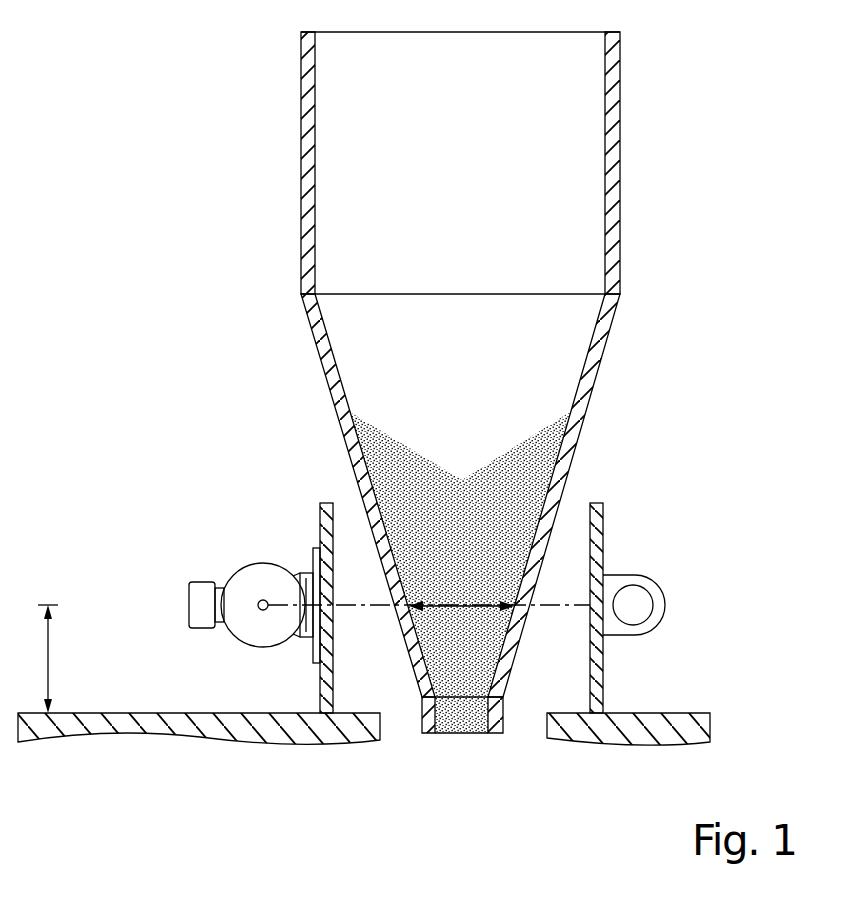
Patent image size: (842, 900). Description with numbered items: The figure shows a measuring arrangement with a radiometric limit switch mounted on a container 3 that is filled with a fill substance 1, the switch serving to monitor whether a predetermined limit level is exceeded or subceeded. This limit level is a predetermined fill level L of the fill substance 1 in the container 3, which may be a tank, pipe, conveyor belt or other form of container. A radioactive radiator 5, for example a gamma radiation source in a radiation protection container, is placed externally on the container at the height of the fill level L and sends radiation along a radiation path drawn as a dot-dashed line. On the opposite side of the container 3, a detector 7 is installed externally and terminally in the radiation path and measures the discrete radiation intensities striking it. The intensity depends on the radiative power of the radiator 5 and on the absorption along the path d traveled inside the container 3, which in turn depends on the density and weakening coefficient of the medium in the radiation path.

The fill substance 1 is at (407, 487).
The container 3 is at (307, 252).
The radioactive radiator 5 is at (262, 601).
The detector 7 is at (638, 612).
The path traveled in the container d is at (463, 603).
The predetermined fill level L is at (55, 659).